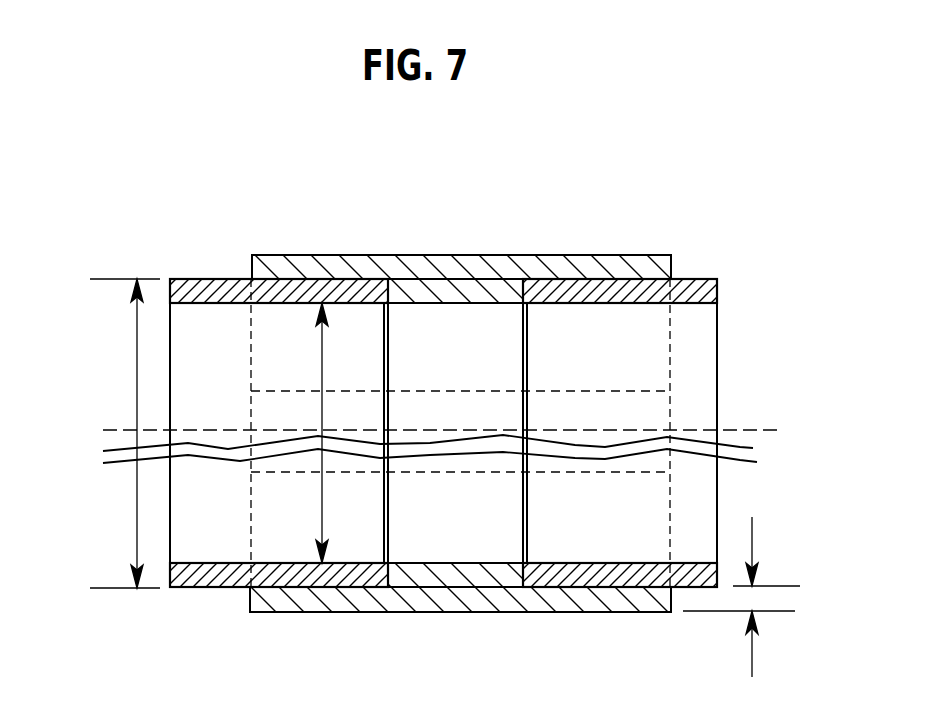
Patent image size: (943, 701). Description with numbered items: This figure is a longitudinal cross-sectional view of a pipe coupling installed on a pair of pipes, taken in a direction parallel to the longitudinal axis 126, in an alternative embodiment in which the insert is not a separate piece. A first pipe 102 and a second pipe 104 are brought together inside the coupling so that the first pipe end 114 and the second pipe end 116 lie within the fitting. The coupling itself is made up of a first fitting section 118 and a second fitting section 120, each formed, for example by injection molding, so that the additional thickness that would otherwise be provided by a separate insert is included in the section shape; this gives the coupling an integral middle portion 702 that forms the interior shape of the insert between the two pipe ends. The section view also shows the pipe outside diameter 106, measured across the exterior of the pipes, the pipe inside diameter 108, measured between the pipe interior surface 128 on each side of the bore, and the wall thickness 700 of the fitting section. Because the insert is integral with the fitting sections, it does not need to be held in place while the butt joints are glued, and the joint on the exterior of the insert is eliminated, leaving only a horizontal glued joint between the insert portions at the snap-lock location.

The first pipe 102 is at (213, 279).
The second pipe 104 is at (698, 288).
The pipe outside diameter 106 is at (135, 507).
The pipe inside diameter 108 is at (323, 363).
The first pipe end 114 is at (388, 372).
The second pipe end 116 is at (527, 352).
The first fitting section 118 is at (315, 255).
The second fitting section 120 is at (282, 612).
The longitudinal axis 126 is at (738, 429).
The pipe interior surface 128 is at (302, 527).
The wall thickness 700 is at (750, 660).
The middle portion 702 is at (525, 626).